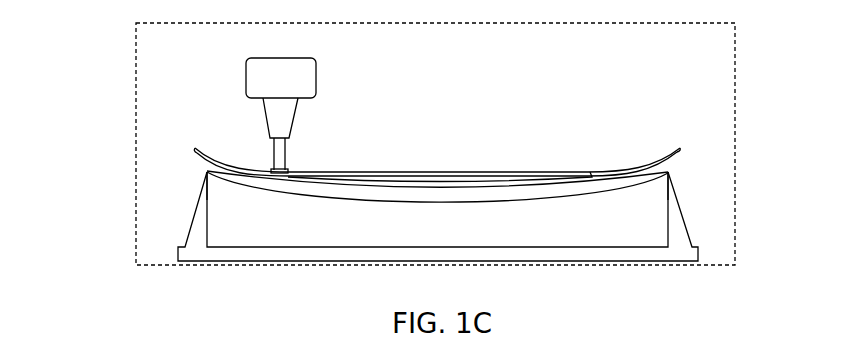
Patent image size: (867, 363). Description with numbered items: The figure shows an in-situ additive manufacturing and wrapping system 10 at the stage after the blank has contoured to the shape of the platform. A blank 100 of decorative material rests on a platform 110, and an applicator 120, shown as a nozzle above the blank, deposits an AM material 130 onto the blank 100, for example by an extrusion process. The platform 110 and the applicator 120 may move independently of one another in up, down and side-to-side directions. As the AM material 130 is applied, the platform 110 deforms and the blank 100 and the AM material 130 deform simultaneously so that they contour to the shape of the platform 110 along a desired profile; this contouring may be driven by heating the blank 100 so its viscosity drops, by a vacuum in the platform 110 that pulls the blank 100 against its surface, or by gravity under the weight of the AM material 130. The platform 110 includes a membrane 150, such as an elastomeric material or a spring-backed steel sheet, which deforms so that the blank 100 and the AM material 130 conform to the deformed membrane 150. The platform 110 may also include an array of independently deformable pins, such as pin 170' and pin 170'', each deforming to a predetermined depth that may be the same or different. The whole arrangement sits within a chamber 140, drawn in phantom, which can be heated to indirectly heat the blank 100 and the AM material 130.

The in-situ additive manufacturing and wrapping system 10 is at (661, 108).
The blank 100 is at (200, 145).
The platform 110 is at (249, 263).
The applicator 120 is at (321, 73).
The AM material 130 is at (432, 168).
The chamber 140 is at (134, 151).
The membrane 150 is at (425, 201).
The pin 170' is at (238, 198).
The pin 170'' is at (635, 198).